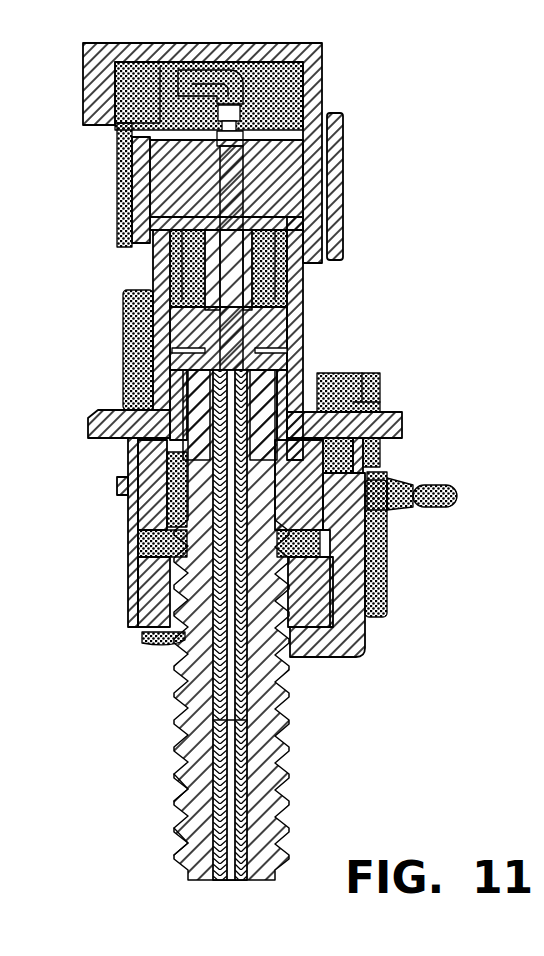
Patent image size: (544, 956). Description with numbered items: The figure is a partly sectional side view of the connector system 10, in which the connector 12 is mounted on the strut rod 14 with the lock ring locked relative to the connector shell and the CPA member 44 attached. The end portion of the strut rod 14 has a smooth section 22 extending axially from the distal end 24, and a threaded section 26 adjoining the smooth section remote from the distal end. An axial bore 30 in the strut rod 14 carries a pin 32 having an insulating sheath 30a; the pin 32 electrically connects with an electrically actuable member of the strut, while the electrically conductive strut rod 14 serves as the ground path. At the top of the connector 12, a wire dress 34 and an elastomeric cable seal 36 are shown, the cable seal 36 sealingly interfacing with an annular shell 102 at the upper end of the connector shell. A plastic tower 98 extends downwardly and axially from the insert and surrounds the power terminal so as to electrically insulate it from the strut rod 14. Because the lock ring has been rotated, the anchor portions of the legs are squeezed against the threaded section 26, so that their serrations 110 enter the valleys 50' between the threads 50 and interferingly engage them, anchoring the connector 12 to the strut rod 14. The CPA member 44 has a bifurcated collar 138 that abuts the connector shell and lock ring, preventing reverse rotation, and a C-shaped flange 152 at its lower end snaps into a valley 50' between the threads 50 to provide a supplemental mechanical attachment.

The connector system 10 is at (404, 300).
The connector 12 is at (345, 284).
The strut rod 14 is at (306, 788).
The smooth section 22 is at (302, 408).
The distal end 24 is at (285, 340).
The threaded section 26 is at (290, 680).
The axial bore 30 is at (224, 693).
The electrode tube portion 30a is at (222, 748).
The pin 32 is at (243, 717).
The wire dress 34 is at (352, 118).
The elastomeric cable seal 36 is at (307, 179).
The connector position assurance (CPA) member 44 is at (403, 524).
The threads 50 is at (137, 792).
The valleys 50' is at (132, 842).
The plastic tower 98 is at (252, 373).
The annular shell 102 is at (332, 212).
The serration 110 is at (170, 572).
The bifurcated collar 138 is at (362, 585).
The C-shaped flange 152 is at (165, 645).